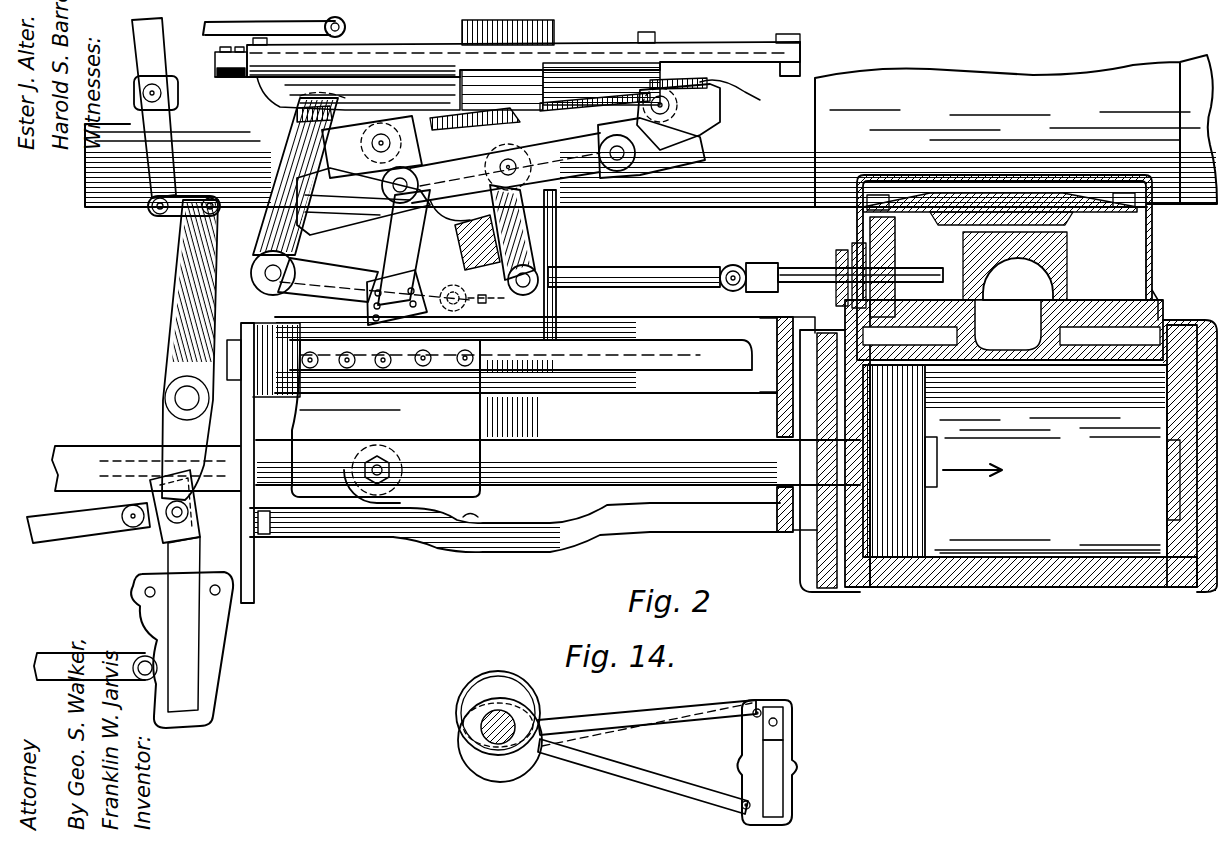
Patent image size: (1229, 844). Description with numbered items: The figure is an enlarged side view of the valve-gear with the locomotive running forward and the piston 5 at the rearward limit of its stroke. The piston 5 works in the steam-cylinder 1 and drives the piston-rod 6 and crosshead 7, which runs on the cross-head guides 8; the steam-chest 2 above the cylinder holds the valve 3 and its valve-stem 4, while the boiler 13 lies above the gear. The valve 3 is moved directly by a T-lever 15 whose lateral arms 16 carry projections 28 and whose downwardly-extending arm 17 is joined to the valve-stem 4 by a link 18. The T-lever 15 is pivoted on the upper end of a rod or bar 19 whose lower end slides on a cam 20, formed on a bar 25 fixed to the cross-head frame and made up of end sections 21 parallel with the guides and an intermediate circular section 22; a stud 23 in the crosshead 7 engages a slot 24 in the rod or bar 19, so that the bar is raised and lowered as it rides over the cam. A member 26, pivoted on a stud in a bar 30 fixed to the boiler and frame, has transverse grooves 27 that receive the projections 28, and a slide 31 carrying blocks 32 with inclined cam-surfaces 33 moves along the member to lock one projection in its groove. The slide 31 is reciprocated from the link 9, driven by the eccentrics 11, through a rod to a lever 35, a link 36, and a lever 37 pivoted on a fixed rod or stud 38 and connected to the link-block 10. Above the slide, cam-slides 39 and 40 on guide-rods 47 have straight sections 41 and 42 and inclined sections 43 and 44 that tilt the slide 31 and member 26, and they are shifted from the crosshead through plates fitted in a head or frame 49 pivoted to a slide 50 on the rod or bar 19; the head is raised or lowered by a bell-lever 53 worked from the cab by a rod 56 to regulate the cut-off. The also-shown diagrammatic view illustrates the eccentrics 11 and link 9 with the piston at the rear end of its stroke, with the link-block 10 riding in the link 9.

In FIG. 2, the steam-cylinder 1 is at (988, 446).
In FIG. 2, the steam-chest 2 is at (1007, 247).
In FIG. 2, the valve 3 is at (1042, 261).
In FIG. 2, the valve-stem 4 is at (797, 275).
In FIG. 2, the piston 5 is at (900, 461).
In FIG. 2, the piston-rod 6 is at (675, 460).
In FIG. 2, the crosshead 7 is at (366, 410).
In FIG. 2, the cross-head guides 8 is at (669, 383).
In FIG. 2, the link 9 is at (133, 632).
In FIG. 14, the link 9 is at (783, 778).
In FIG. 2, the link-block 10 is at (165, 535).
In FIG. 14, the link-block 10 is at (784, 731).
In FIG. 14, the eccentrics 11 is at (522, 702).
In FIG. 2, the boiler 13 is at (651, 131).
In FIG. 2, the T-lever 15 is at (508, 165).
In FIG. 2, the lateral arms 16 is at (508, 168).
In FIG. 2, the downwardly-extending arm 17 is at (512, 232).
In FIG. 2, the link 18 is at (636, 276).
In FIG. 2, the rod or bar 19 is at (477, 242).
In FIG. 2, the cam 20 is at (521, 523).
In FIG. 2, the end sections 21 is at (650, 492).
In FIG. 2, the intermediate circular section 22 is at (450, 565).
In FIG. 2, the stud 23 is at (362, 462).
In FIG. 2, the slot 24 is at (387, 391).
In FIG. 2, the bar 25 is at (520, 549).
In FIG. 2, the member 26 is at (657, 166).
In FIG. 2, the transverse grooves 27 is at (503, 178).
In FIG. 2, the lateral projections 28 is at (407, 247).
In FIG. 2, the bar 30 is at (557, 247).
In FIG. 2, the slide 31 is at (688, 86).
In FIG. 2, the blocks 32 is at (521, 131).
In FIG. 2, the cam-surfaces 33 is at (395, 143).
In FIG. 2, the lever 35 is at (163, 131).
In FIG. 2, the link 36 is at (177, 217).
In FIG. 2, the lever 37 is at (190, 312).
In FIG. 2, the fixed rod or stud 38 is at (185, 400).
In FIG. 2, the cam-slide 39 is at (198, 91).
In FIG. 2, the cam-slide 40 is at (337, 93).
In FIG. 2, the straight section 41 is at (322, 97).
In FIG. 2, the straight section 42 is at (498, 69).
In FIG. 2, the inclined section 43 is at (264, 103).
In FIG. 2, the inclined section 44 is at (502, 104).
In FIG. 2, the guide-rods 47 is at (724, 55).
In FIG. 2, the head or frame 49 is at (397, 297).
In FIG. 2, the slide 50 is at (489, 289).
In FIG. 2, the bell-lever 53 is at (360, 276).
In FIG. 2, the rod 56 is at (212, 33).